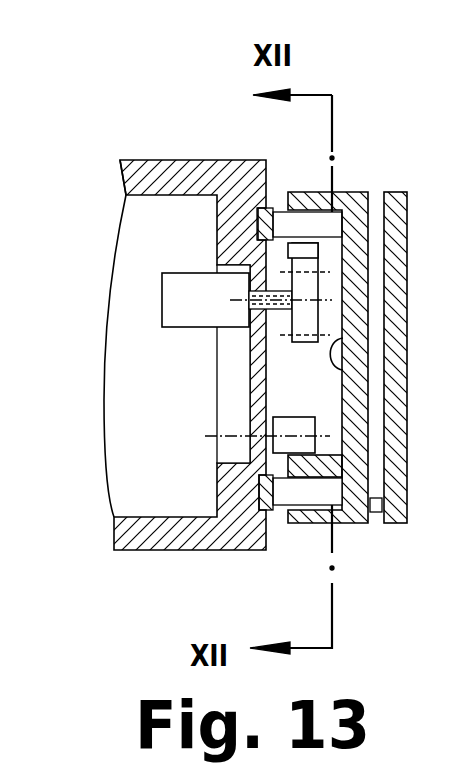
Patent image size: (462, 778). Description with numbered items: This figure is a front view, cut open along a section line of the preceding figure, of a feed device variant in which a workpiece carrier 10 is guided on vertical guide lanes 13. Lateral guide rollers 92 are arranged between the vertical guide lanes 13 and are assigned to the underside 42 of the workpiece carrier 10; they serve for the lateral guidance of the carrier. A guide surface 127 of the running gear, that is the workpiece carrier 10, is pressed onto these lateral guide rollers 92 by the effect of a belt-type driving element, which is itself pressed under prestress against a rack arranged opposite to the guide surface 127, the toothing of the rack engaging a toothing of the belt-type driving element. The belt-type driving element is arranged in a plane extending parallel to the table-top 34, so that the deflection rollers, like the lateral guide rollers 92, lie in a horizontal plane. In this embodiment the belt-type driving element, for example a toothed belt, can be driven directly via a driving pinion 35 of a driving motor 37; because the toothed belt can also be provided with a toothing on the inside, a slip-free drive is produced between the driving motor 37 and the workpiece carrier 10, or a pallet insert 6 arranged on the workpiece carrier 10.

The pallet insert 6 is at (398, 198).
The workpiece carrier 10 is at (358, 513).
The vertical guide lanes 13 is at (271, 506).
The table-top 34 is at (272, 177).
The driving pinion 35 is at (305, 317).
The driving motor 37 is at (178, 297).
The underside of the workpiece carrier 42 is at (343, 367).
The lateral guide rollers 92 is at (217, 483).
The guide surface 127 is at (328, 450).